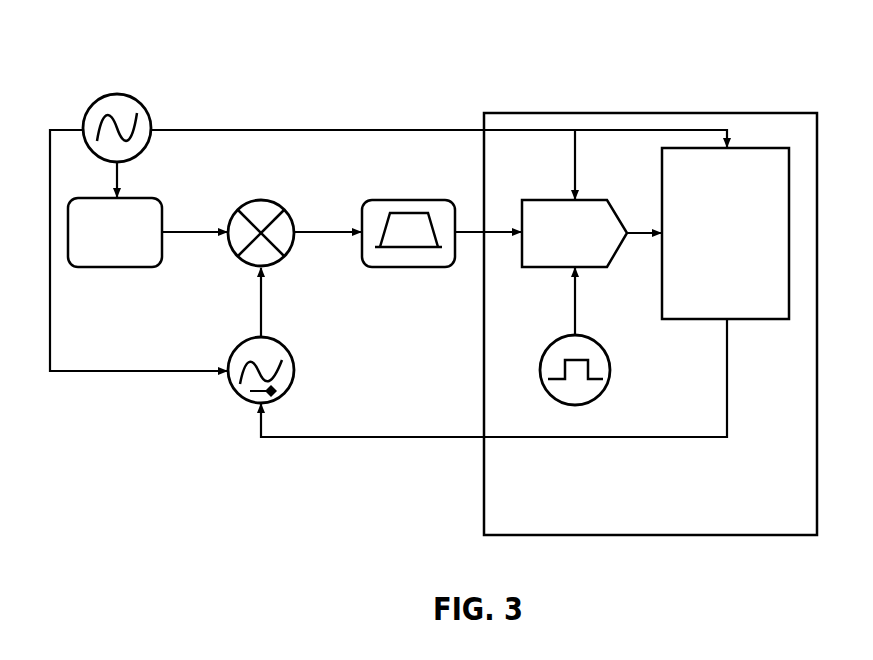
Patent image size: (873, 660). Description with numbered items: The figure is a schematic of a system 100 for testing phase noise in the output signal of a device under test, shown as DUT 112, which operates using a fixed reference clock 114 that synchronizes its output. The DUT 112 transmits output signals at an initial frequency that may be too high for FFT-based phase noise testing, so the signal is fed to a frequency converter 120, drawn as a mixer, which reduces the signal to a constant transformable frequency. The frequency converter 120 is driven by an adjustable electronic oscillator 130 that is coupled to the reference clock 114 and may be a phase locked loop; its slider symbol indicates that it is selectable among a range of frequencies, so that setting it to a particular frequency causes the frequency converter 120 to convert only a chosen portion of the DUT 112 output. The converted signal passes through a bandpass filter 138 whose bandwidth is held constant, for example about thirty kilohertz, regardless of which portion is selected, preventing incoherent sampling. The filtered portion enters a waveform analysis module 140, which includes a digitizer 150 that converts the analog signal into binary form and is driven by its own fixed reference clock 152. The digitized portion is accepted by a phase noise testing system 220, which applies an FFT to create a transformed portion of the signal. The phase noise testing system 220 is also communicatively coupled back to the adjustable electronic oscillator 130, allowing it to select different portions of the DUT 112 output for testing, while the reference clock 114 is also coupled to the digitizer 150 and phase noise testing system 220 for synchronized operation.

The system 100 is at (209, 99).
The fixed reference clock 114 is at (99, 125).
The device under test (DUT) 112 is at (115, 232).
The frequency converter 120 is at (260, 220).
The bandpass filter 138 is at (412, 249).
The adjustable electronic oscillator 130 is at (236, 397).
The digitizer 150 is at (585, 222).
The fixed reference clock 152 is at (588, 373).
The phase noise testing system 220 is at (725, 233).
The waveform analysis module 140 is at (800, 525).